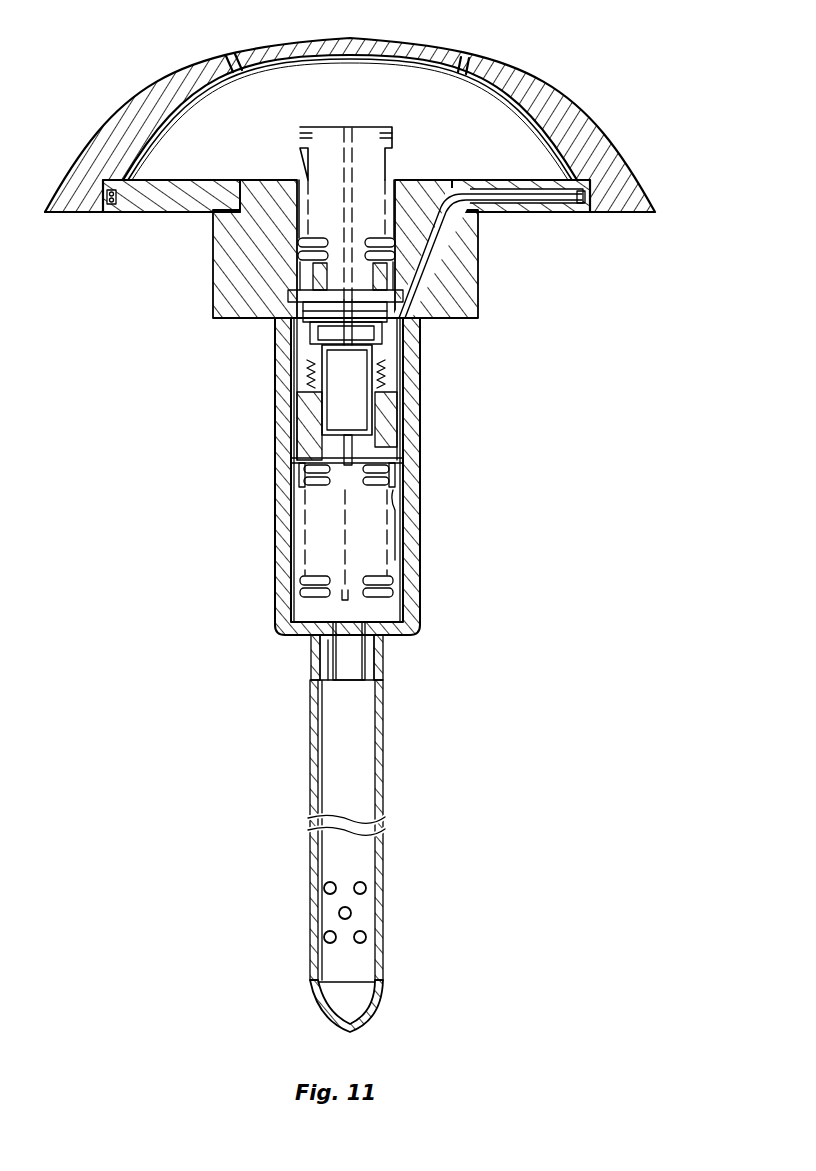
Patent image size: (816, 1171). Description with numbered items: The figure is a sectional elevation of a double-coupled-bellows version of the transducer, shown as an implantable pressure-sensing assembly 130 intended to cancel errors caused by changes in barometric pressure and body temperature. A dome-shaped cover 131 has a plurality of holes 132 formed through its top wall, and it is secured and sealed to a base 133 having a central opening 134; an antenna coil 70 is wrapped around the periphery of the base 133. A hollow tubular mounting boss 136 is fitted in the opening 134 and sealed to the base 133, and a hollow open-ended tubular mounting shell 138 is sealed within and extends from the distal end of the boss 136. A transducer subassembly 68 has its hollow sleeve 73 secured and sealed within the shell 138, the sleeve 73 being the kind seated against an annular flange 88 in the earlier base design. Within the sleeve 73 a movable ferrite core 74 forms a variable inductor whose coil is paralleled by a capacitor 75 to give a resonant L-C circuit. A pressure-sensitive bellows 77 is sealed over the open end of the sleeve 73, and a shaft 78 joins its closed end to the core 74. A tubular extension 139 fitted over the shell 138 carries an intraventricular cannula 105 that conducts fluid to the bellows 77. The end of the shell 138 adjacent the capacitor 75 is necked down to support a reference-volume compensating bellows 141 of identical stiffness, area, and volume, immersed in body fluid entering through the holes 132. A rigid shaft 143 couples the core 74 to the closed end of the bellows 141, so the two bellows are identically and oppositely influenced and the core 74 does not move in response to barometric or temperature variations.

The implantable pressure-sensing assembly 130 is at (545, 372).
The dome-shaped cover 131 is at (575, 115).
The holes 132 is at (232, 55).
The base 133 is at (182, 213).
The central opening 134 is at (253, 178).
The hollow tubular mounting boss 136 is at (480, 268).
The tubular mounting shell 138 is at (418, 372).
The tubular extension 139 is at (420, 553).
The reference-volume compensating bellows 141 is at (393, 147).
The rigid shaft 143 is at (343, 282).
The antenna coil 70 is at (597, 193).
The hollow sleeve 73 is at (397, 412).
The ferrite core 74 is at (362, 414).
The capacitor 75 is at (315, 317).
The pressure-sensitive bellows 77 is at (305, 596).
The shaft 78 is at (400, 438).
The transducer subassembly 68 is at (393, 475).
The annular flange 88 is at (393, 490).
The intraventricular cannula 105 is at (387, 783).